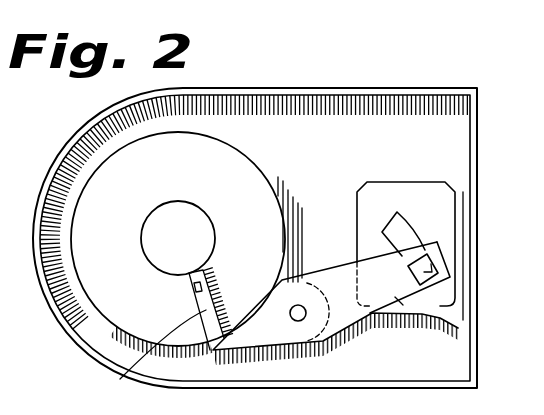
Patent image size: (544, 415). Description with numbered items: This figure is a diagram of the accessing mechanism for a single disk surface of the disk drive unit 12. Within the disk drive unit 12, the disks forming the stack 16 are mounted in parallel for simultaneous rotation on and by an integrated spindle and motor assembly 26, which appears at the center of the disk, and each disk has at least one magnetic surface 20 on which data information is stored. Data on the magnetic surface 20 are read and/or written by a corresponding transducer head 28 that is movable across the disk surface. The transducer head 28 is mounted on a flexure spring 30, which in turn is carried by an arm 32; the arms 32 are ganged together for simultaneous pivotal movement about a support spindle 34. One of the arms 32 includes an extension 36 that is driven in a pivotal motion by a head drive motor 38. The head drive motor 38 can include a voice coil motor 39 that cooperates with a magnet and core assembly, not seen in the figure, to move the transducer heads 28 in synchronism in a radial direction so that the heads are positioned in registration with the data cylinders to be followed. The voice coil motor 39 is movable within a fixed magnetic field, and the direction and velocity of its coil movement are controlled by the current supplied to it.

The disk drive unit 12 is at (356, 78).
The stack 16 is at (58, 232).
The magnetic surface 20 is at (128, 160).
The integrated spindle and motor assembly 26 is at (197, 217).
The transducer head 28 is at (188, 286).
The flexure spring 30 is at (122, 379).
The arm 32 is at (213, 350).
The support spindle 34 is at (302, 305).
The extension 36 is at (458, 326).
The head drive motor 38 is at (430, 183).
The voice coil motor 39 is at (420, 263).